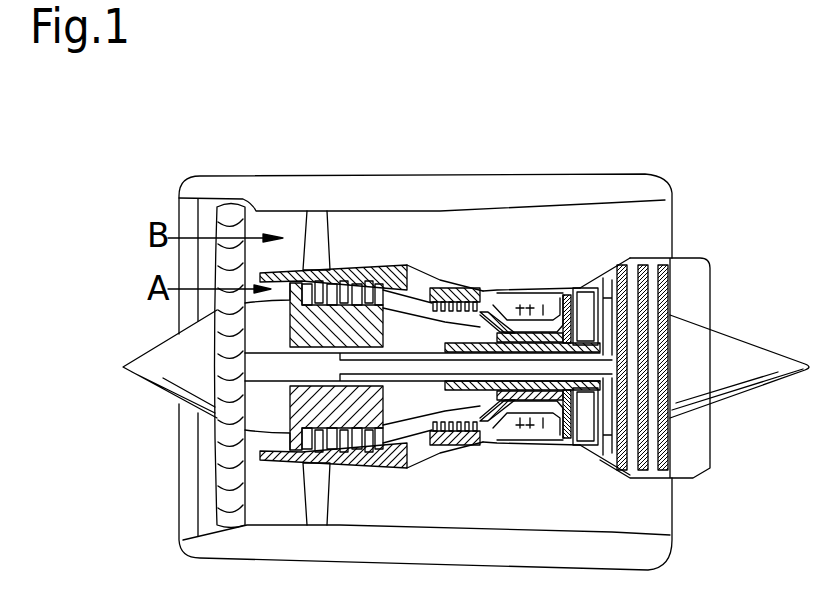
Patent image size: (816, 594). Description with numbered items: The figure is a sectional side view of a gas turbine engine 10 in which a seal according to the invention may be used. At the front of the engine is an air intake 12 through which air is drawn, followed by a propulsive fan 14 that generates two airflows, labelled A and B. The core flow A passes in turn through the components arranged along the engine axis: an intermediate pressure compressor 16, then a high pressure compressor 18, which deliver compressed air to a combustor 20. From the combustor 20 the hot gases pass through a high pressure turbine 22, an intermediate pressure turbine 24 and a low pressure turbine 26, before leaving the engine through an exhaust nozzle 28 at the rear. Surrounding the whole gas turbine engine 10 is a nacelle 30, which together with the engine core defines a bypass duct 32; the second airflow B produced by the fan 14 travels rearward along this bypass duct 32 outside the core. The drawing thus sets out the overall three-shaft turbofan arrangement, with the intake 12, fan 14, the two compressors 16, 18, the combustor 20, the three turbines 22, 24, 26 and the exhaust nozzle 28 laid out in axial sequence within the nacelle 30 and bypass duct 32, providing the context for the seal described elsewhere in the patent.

The gas turbine engine 10 is at (160, 186).
The air intake 12 is at (179, 199).
The propulsive fan 14 is at (230, 212).
The intermediate pressure compressor 16 is at (369, 410).
The high pressure compressor 18 is at (457, 305).
The combustor 20 is at (530, 307).
The high pressure turbine 22 is at (563, 292).
The intermediate pressure turbine 24 is at (587, 272).
The low pressure turbine 26 is at (676, 257).
The exhaust nozzle 28 is at (692, 278).
The nacelle 30 is at (297, 195).
The bypass duct 32 is at (465, 252).